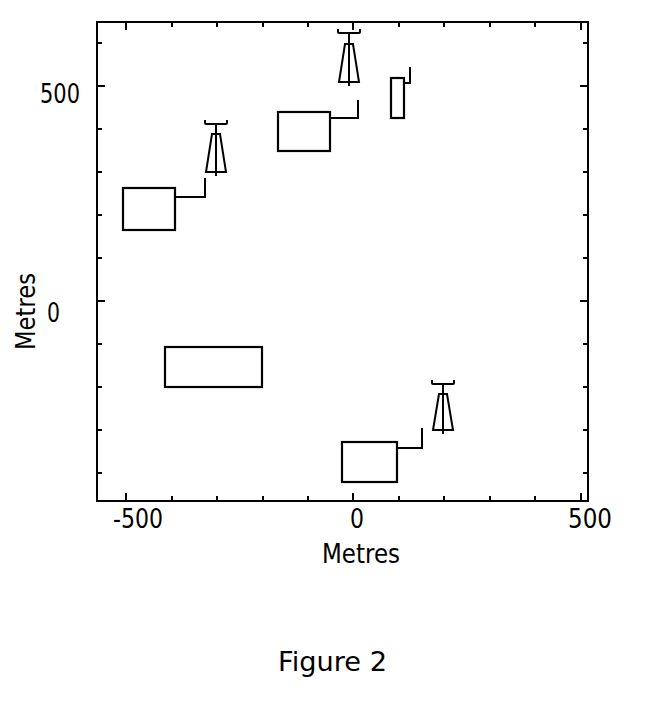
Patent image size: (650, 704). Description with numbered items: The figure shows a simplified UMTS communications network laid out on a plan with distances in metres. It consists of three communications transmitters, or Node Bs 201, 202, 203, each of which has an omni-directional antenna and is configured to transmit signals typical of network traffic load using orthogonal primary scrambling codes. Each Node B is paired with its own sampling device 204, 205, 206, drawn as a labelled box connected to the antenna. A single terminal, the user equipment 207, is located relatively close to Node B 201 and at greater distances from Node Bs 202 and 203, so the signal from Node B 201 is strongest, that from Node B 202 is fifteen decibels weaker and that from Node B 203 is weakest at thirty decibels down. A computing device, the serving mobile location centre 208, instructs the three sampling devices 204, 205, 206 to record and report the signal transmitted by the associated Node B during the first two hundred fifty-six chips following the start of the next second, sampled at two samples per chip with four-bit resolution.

The communications transmitter (Node B) 201 is at (332, 52).
The communications transmitter (Node B) 202 is at (235, 163).
The communications transmitter (Node B) 203 is at (460, 397).
The sampling device 204 is at (318, 125).
The sampling device 205 is at (164, 204).
The sampling device 206 is at (382, 455).
The terminal (user equipment, UE) 207 is at (412, 92).
The computing device (serving mobile location centre, SMLC) 208 is at (213, 367).